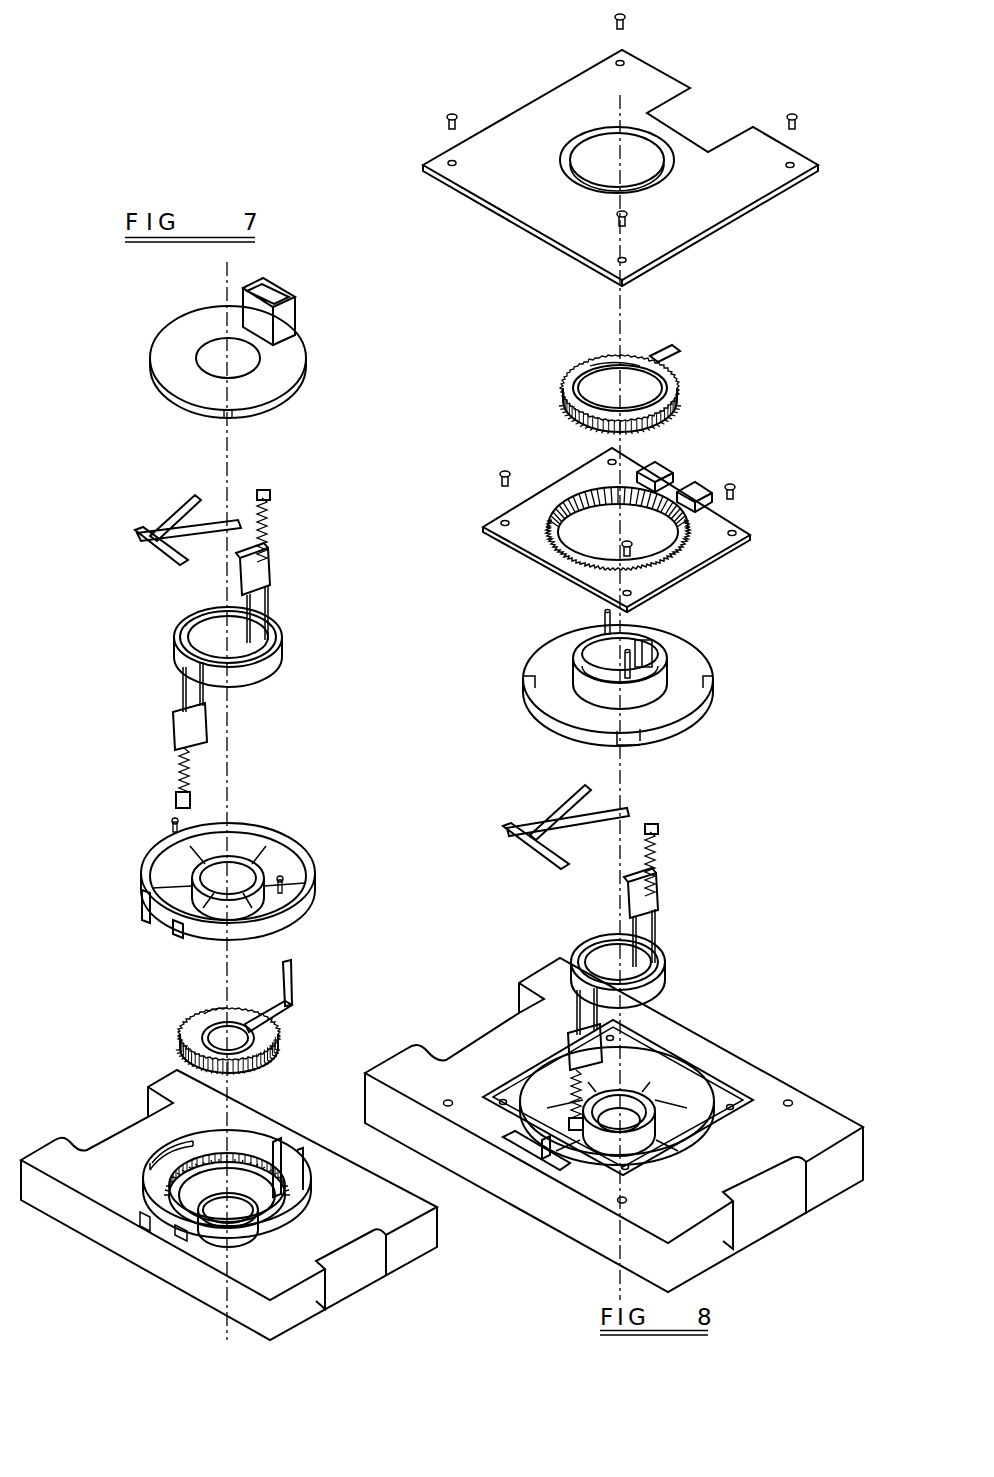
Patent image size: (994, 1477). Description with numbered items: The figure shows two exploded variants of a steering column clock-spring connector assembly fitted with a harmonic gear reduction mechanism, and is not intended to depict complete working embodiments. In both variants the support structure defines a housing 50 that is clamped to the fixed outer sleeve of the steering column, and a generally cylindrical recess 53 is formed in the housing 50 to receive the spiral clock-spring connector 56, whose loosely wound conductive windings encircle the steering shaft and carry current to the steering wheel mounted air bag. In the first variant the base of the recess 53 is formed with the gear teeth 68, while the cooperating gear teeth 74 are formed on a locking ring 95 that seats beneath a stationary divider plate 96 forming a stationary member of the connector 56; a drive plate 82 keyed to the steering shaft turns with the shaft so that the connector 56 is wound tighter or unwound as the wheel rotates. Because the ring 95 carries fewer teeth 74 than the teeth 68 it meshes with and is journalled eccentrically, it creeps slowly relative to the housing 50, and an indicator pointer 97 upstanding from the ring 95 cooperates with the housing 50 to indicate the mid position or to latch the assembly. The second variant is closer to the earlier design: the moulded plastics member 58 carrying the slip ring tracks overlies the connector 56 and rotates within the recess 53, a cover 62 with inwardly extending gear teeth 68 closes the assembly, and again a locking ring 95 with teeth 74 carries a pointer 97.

In FIG. 7, the housing 50 is at (112, 1164).
In FIG. 8, the housing 50 is at (741, 1053).
In FIG. 7, the cylindrical recess 53 is at (248, 1151).
In FIG. 8, the cylindrical recess 53 is at (674, 1068).
In FIG. 7, the clock-spring connector 56 is at (275, 662).
In FIG. 8, the clock-spring connector 56 is at (670, 958).
In FIG. 8, the moulded plastics member 58 is at (693, 668).
In FIG. 8, the cover 62 is at (713, 530).
In FIG. 7, the gear teeth 68 is at (197, 1185).
In FIG. 8, the gear teeth 68 is at (672, 482).
In FIG. 7, the gear teeth 74 is at (182, 1037).
In FIG. 8, the gear teeth 74 is at (673, 403).
In FIG. 7, the drive plate 82 is at (283, 372).
In FIG. 7, the locking ring 95 is at (212, 1012).
In FIG. 8, the locking ring 95 is at (630, 357).
In FIG. 7, the stationary divider plate 96 is at (282, 870).
In FIG. 7, the indicator pointer 97 is at (288, 983).
In FIG. 8, the indicator pointer 97 is at (677, 356).